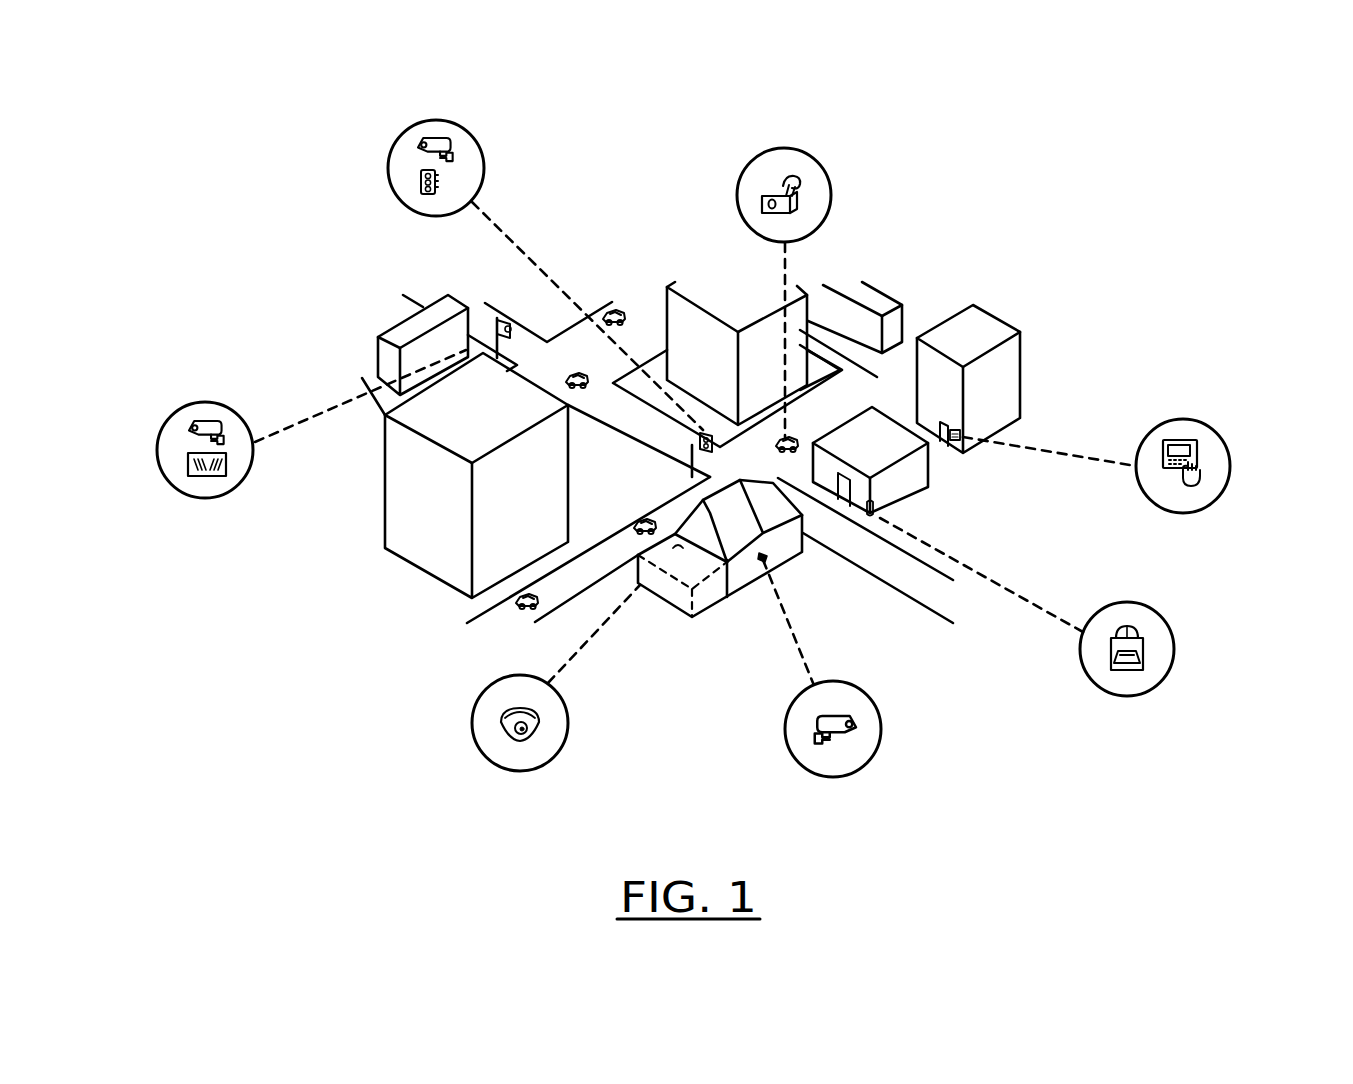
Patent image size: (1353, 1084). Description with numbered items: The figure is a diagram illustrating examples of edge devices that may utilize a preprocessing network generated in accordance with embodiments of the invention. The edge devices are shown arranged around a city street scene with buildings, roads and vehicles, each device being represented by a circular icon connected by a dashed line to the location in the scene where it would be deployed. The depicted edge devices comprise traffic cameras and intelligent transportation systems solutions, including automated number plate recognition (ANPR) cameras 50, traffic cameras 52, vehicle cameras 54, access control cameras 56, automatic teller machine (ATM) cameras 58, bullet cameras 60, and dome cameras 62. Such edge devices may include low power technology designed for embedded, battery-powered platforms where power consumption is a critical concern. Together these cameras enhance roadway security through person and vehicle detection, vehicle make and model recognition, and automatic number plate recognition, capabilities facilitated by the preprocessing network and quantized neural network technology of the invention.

The automated number plate recognition (ANPR) cameras 50 is at (190, 403).
The traffic cameras 52 is at (414, 134).
The vehicle cameras 54 is at (742, 178).
The access control cameras 56 is at (1227, 438).
The automatic teller machine (ATM) cameras 58 is at (1153, 603).
The bullet cameras 60 is at (857, 684).
The dome cameras 62 is at (492, 683).